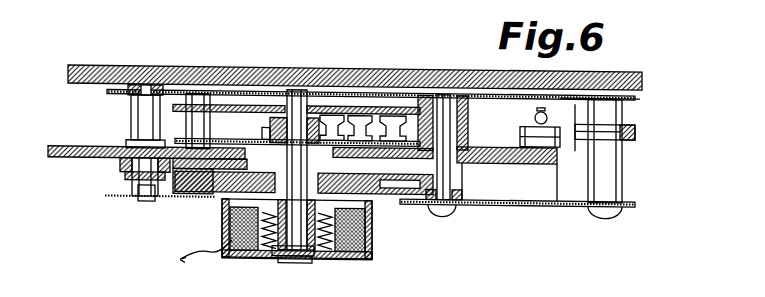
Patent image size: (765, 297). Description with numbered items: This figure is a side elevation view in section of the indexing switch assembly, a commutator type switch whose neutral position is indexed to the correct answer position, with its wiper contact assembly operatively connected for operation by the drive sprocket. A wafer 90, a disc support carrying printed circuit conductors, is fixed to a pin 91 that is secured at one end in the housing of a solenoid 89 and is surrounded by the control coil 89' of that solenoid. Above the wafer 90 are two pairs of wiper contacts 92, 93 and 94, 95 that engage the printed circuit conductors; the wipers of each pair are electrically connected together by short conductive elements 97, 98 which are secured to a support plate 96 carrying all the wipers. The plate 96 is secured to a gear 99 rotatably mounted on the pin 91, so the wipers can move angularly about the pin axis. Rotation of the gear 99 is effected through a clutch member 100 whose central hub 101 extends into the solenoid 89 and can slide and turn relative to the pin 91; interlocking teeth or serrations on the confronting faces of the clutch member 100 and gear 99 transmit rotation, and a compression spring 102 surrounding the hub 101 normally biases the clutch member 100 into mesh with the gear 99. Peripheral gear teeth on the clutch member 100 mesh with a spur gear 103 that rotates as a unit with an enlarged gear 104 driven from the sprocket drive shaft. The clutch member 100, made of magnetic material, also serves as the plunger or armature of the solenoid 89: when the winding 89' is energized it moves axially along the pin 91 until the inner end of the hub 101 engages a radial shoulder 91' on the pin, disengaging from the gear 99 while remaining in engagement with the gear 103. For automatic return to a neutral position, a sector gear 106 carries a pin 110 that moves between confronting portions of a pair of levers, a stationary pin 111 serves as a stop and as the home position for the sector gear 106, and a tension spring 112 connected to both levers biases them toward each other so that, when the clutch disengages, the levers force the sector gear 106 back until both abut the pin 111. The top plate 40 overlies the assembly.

The top plate 40 is at (252, 66).
The solenoid 89 is at (309, 239).
The control coil 89' is at (319, 229).
The wafer 90 is at (232, 100).
The pin 91 is at (297, 146).
The radial shoulder 91' is at (293, 264).
The wiper contact 92 is at (425, 91).
The wiper contact 93 is at (386, 110).
The wiper contact 94 is at (354, 114).
The wiper contact 95 is at (320, 110).
The support plate 96 is at (184, 137).
The conductive element 97 is at (405, 120).
The conductive element 98 is at (317, 110).
The gear 99 is at (272, 138).
The clutch member 100 is at (170, 193).
The central hub 101 is at (240, 219).
The compression spring 102 is at (252, 243).
The spur gear 103 is at (120, 174).
The enlarged gear 104 is at (62, 158).
The sector gear 106 is at (490, 178).
The pin 110 is at (565, 160).
The stationary pin 111 is at (624, 173).
The tension spring 112 is at (544, 103).